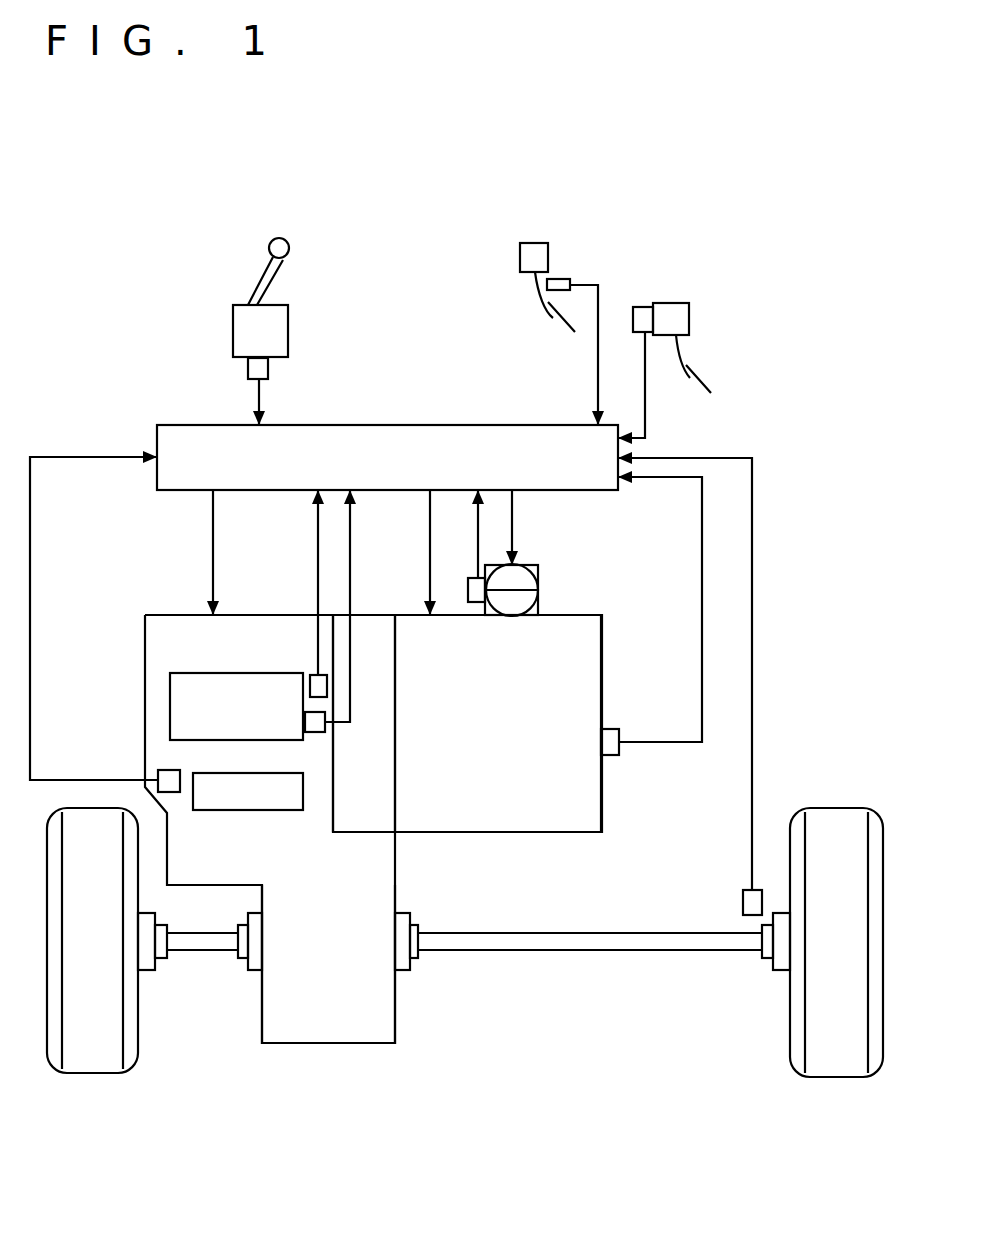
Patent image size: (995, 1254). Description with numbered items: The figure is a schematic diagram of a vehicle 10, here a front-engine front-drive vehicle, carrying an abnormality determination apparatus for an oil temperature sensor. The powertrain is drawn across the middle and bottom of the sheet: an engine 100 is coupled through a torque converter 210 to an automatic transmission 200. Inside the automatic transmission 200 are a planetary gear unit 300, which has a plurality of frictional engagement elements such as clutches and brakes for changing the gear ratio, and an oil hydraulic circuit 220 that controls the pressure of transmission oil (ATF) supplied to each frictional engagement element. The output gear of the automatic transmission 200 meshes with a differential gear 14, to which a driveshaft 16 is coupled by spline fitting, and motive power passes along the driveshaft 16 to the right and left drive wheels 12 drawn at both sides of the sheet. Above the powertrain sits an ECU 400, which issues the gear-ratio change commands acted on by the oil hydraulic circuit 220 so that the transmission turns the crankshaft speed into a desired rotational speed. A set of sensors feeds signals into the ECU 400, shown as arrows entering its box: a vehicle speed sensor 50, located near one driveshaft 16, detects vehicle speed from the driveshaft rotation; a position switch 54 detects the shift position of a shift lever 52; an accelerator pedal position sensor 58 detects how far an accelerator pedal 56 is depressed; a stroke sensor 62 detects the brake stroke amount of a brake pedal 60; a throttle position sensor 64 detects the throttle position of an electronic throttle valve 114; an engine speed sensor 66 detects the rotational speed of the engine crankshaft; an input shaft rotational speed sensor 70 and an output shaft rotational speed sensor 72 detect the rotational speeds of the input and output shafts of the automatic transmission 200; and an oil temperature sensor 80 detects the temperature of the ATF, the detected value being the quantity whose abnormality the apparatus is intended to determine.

The vehicle 10 is at (415, 99).
The drive wheels 12 is at (88, 1075).
The differential gear 14 is at (327, 1045).
The driveshaft 16 is at (200, 953).
The vehicle speed sensor 50 is at (743, 893).
The shift lever 52 is at (287, 272).
The position switch 54 is at (248, 372).
The accelerator pedal 56 is at (542, 312).
The accelerator pedal position sensor 58 is at (560, 278).
The brake pedal 60 is at (675, 350).
The stroke sensor 62 is at (645, 307).
The throttle position sensor 64 is at (468, 590).
The engine speed sensor 66 is at (608, 757).
The input shaft rotational speed sensor 70 is at (310, 676).
The output shaft rotational speed sensor 72 is at (315, 733).
The oil temperature sensor 80 is at (162, 770).
The engine 100 is at (520, 832).
The electronic throttle valve 114 is at (531, 565).
The automatic transmission 200 is at (235, 615).
The torque converter 210 is at (369, 615).
The oil hydraulic circuit 220 is at (240, 810).
The planetary gear unit 300 is at (170, 705).
The ECU 400 is at (497, 425).